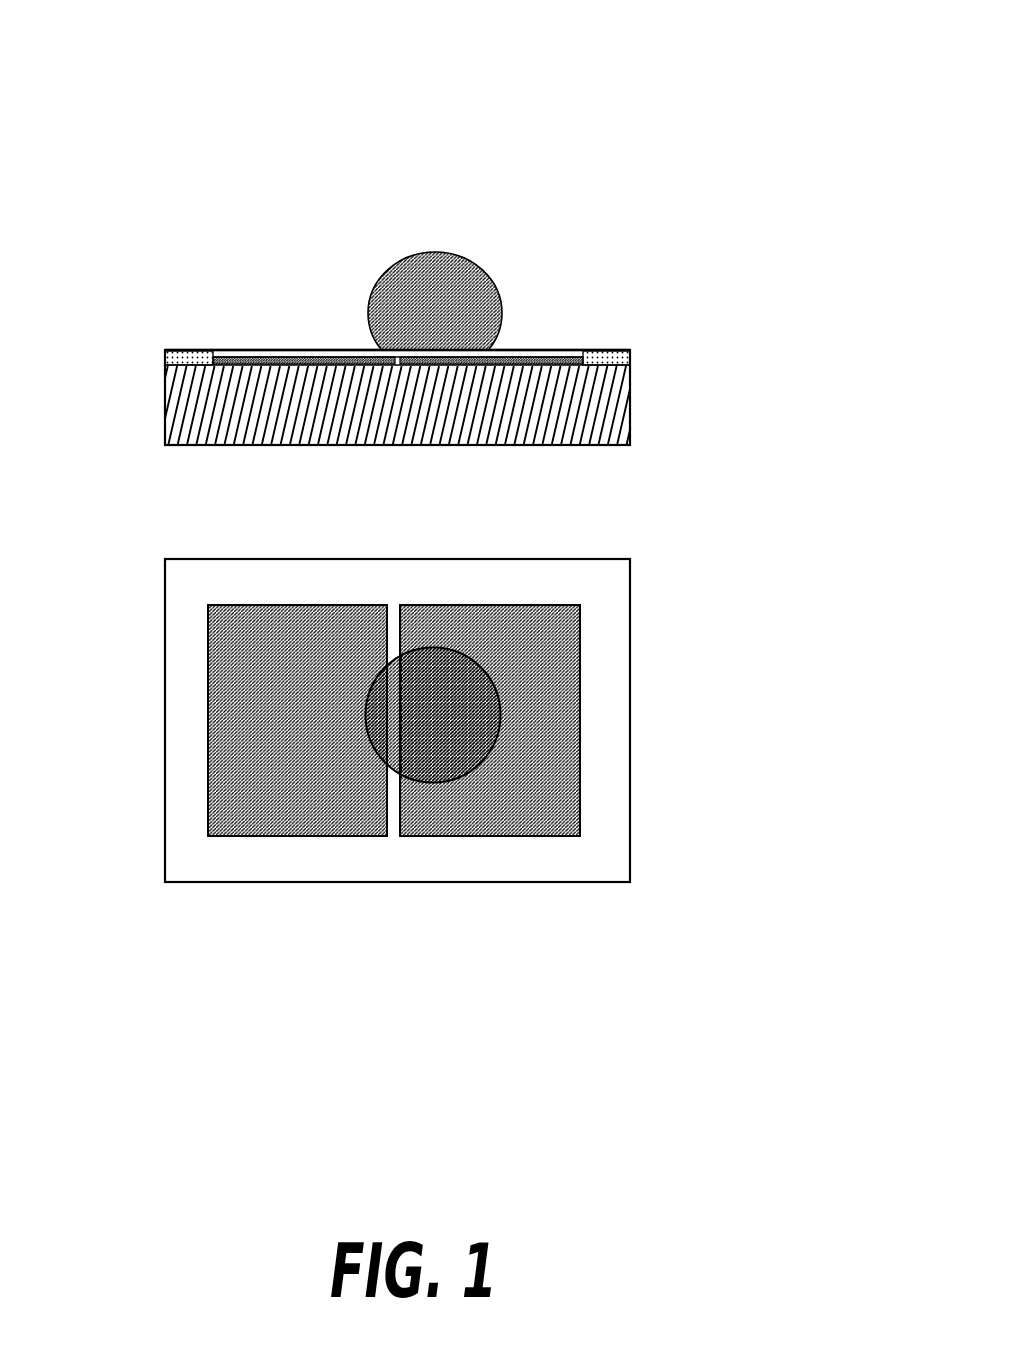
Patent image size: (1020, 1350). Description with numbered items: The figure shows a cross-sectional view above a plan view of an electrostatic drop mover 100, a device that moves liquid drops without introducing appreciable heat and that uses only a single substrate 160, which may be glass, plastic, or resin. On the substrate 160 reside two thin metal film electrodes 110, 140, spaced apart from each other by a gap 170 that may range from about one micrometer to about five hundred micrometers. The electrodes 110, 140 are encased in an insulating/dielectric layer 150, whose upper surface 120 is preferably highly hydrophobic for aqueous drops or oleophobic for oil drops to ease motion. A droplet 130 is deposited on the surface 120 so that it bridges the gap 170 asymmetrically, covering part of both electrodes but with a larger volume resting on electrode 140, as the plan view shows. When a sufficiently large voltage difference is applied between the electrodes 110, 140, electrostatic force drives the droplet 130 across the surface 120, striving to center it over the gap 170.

The electrostatic drop mover 100 is at (707, 95).
The electrode 110 is at (213, 350).
The surface of the dielectric layer 120 is at (302, 350).
The droplet 130 is at (448, 252).
The electrode 140 is at (573, 353).
The insulating/dielectric layer 150 is at (632, 353).
The substrate 160 is at (617, 407).
The gap 170 is at (393, 607).